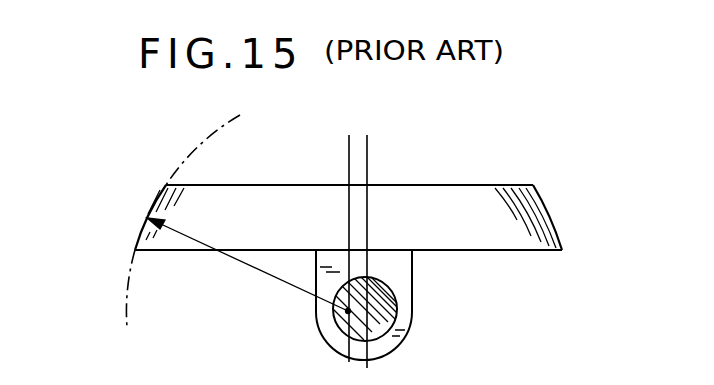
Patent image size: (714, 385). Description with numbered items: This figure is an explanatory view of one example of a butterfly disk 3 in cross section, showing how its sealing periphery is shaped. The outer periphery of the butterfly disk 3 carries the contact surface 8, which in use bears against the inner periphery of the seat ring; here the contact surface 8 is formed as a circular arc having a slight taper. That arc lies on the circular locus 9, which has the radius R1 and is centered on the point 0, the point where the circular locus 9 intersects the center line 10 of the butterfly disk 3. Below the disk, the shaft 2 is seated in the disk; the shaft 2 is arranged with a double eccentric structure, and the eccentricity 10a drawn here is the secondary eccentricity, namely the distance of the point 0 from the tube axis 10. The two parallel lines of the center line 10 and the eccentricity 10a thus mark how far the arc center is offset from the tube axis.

The butterfly disk 3 is at (409, 190).
The shaft 2 is at (392, 318).
The point 0 is at (346, 313).
The center line 10 is at (345, 136).
The eccentricity 10a is at (370, 136).
The circular locus 9 is at (128, 272).
The radius R1 is at (247, 264).
The contact surface 8 is at (555, 218).